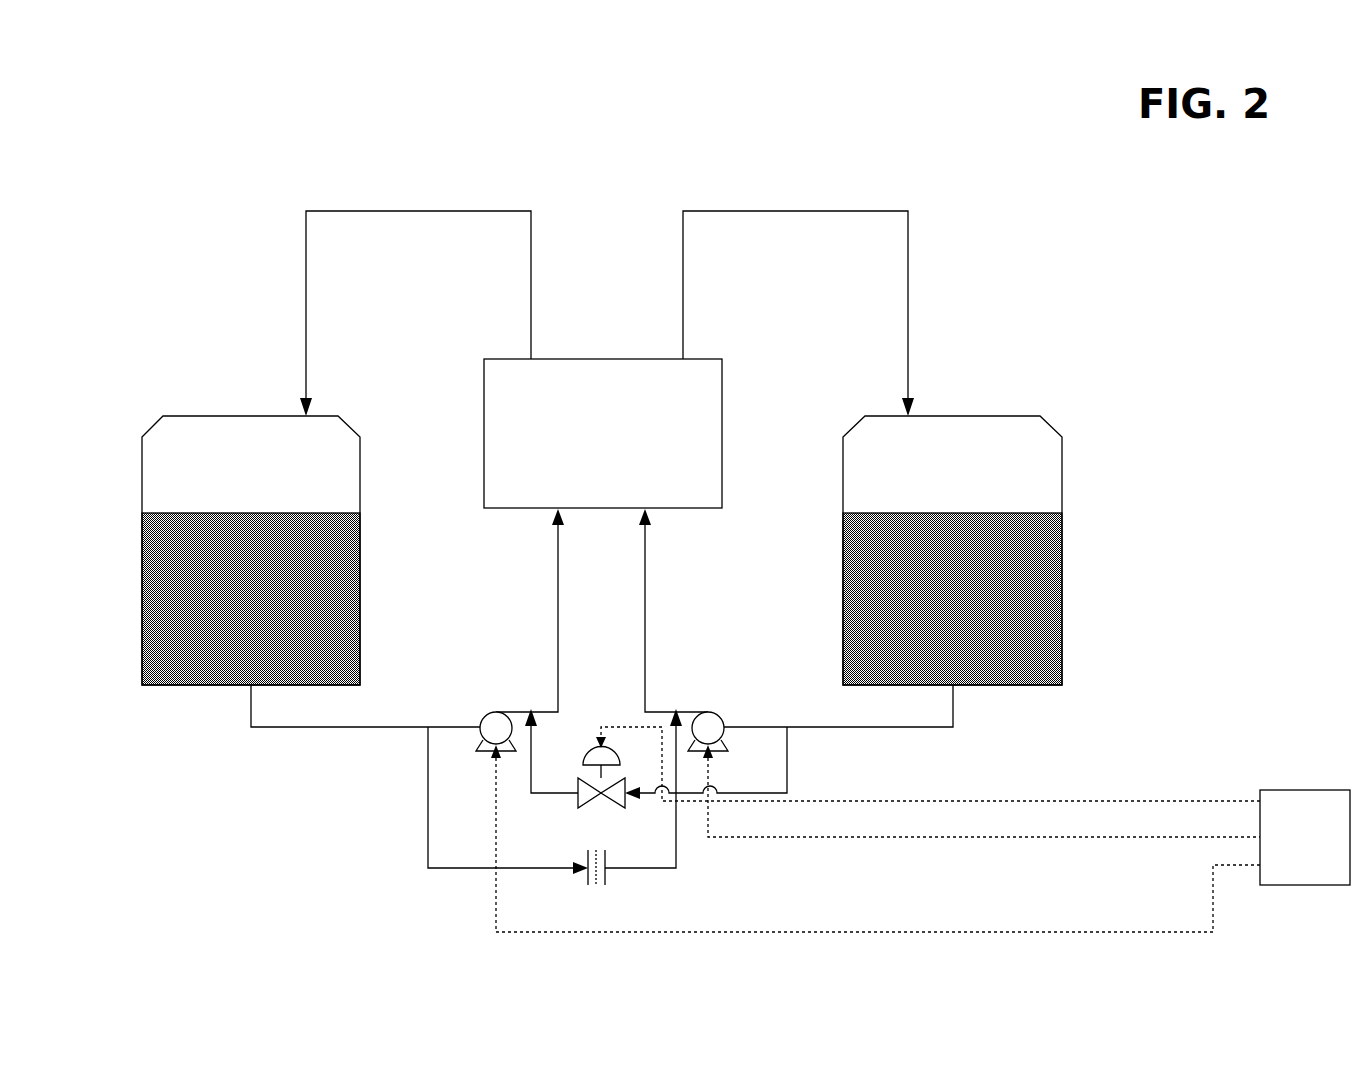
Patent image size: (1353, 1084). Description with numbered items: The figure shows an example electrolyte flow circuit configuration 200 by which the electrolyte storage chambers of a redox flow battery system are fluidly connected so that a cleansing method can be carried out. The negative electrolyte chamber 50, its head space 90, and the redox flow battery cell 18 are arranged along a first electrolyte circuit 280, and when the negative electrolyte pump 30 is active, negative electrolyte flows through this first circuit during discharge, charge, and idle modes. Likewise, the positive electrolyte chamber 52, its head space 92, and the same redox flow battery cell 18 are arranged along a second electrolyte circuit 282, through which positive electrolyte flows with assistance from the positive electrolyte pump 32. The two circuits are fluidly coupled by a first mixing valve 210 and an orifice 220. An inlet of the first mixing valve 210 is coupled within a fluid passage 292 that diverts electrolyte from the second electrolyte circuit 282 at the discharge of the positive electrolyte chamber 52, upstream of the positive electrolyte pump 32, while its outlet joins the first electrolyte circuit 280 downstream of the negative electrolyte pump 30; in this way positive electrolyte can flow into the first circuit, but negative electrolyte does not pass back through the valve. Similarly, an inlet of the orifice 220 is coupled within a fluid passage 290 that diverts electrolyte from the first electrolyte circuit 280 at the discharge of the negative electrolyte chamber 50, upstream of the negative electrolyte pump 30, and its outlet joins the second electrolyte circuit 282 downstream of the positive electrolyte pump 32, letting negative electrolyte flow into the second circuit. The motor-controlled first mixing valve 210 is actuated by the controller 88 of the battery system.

The electrolyte flow circuit configuration 200 is at (122, 98).
The redox flow battery cell 18 is at (603, 433).
The first electrolyte circuit 280 is at (376, 269).
The second electrolyte circuit 282 is at (836, 259).
The head space 90 is at (311, 571).
The head space 92 is at (893, 571).
The negative electrolyte chamber 50 is at (251, 599).
The positive electrolyte chamber 52 is at (952, 599).
The negative electrolyte pump 30 is at (485, 712).
The positive electrolyte pump 32 is at (721, 716).
The first mixing valve 210 is at (590, 762).
The orifice 220 is at (606, 886).
The fluid passage 290 is at (428, 784).
The fluid passage 292 is at (787, 745).
The controller 88 is at (923, 829).